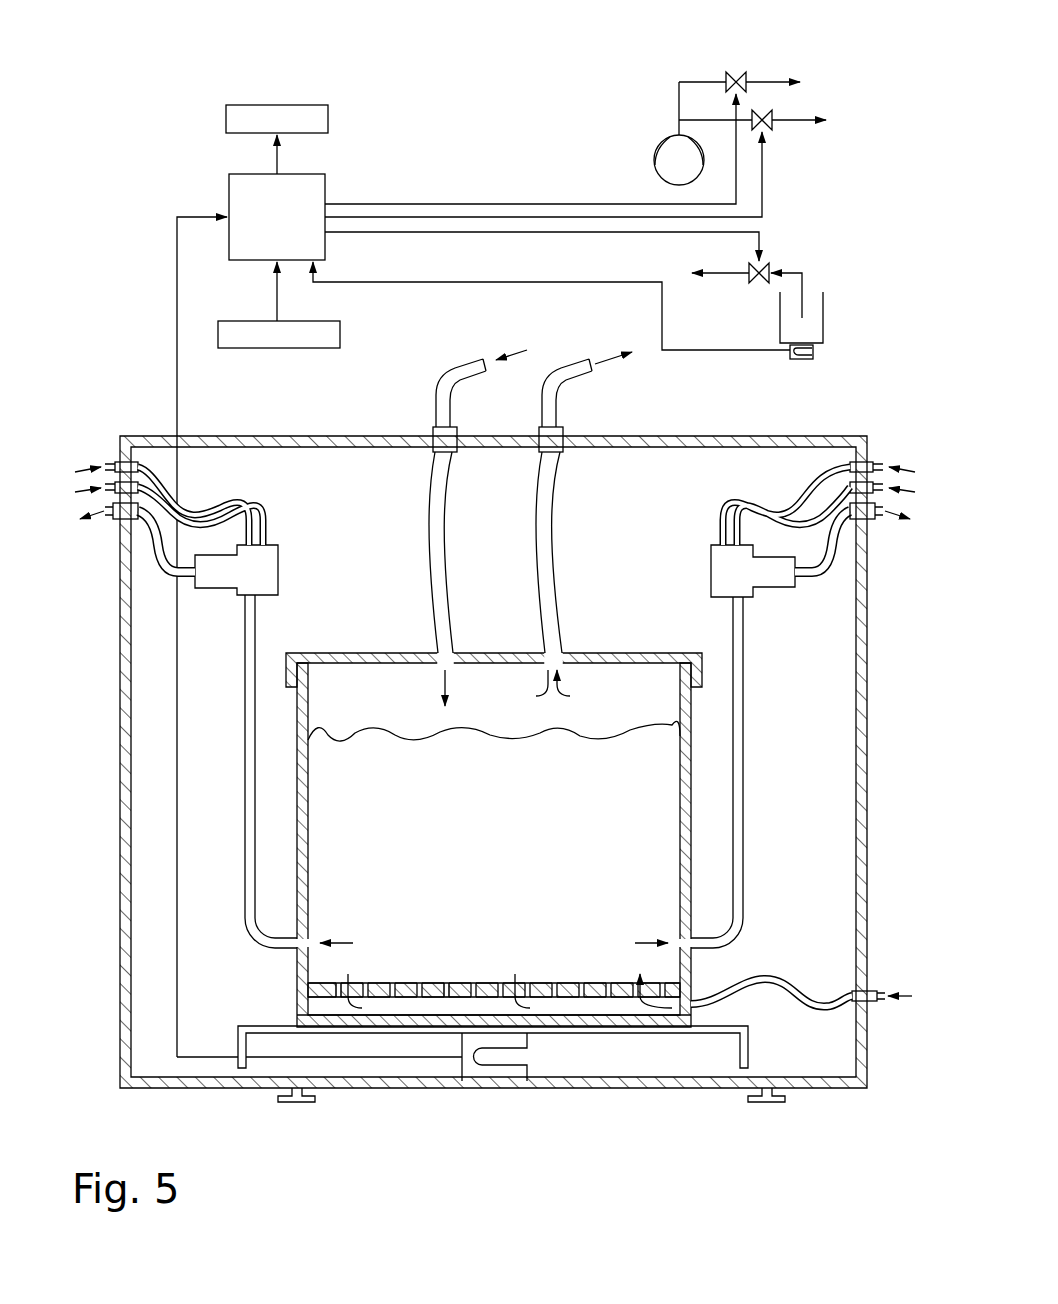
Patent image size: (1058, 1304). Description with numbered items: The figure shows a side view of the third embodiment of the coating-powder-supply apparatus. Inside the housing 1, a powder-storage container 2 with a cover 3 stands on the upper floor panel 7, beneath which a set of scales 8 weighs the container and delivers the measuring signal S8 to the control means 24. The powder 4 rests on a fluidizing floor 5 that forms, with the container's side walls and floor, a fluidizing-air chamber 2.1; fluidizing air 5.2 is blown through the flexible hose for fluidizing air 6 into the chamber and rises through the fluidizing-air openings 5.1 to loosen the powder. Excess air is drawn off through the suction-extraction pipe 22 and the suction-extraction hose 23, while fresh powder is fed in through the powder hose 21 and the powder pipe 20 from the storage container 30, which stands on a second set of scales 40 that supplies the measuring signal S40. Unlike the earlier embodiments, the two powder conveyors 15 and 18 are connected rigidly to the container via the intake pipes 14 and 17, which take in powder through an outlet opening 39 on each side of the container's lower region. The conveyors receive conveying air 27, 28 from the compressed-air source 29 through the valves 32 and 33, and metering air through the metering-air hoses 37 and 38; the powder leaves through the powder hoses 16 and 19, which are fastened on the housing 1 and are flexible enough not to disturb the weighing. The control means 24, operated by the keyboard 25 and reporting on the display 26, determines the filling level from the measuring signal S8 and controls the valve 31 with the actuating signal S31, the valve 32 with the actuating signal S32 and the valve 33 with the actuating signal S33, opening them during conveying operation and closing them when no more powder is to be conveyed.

The housing 1 is at (256, 436).
The powder-storage container 2 is at (297, 773).
The fluidizing-air chamber 2.1 is at (606, 1022).
The cover 3 is at (347, 653).
The powder 4 is at (490, 732).
The fluidizing floor 5 is at (600, 983).
The fluidizing-air openings 5.1 is at (472, 983).
The fluidizing air 5.2 is at (630, 981).
The hose for fluidizing air 6 is at (770, 981).
The upper floor panel 7 is at (256, 1026).
The set of scales 8 is at (530, 1045).
The intake pipe 14 is at (246, 815).
The powder conveyor 15 is at (278, 556).
The powder hose 16 is at (165, 580).
The intake pipe 17 is at (745, 815).
The powder conveyor 18 is at (711, 554).
The powder hose 19 is at (812, 580).
The powder pipe 20 is at (444, 578).
The powder hose 21 is at (470, 363).
The suction-extraction pipe 22 is at (552, 578).
The suction-extraction hose 23 is at (576, 365).
The control means 24 is at (328, 180).
The keyboard 25 is at (341, 336).
The display 26 is at (330, 119).
The conveying air 27 is at (437, 274).
The conveying air 28 is at (845, 294).
The compressed-air source 29 is at (657, 151).
The storage container 30 is at (812, 296).
The valve 31 is at (770, 268).
The valve 32 is at (741, 70).
The valve 33 is at (778, 130).
The metering-air hose 37 is at (252, 524).
The metering-air hose 38 is at (818, 520).
The outlet opening 39 is at (675, 943).
The set of scales 40 is at (800, 360).
The measuring signal S8 is at (207, 637).
The actuating signal S31 is at (542, 246).
The actuating signal S32 is at (530, 149).
The actuating signal S33 is at (566, 174).
The measuring signal S40 is at (551, 308).